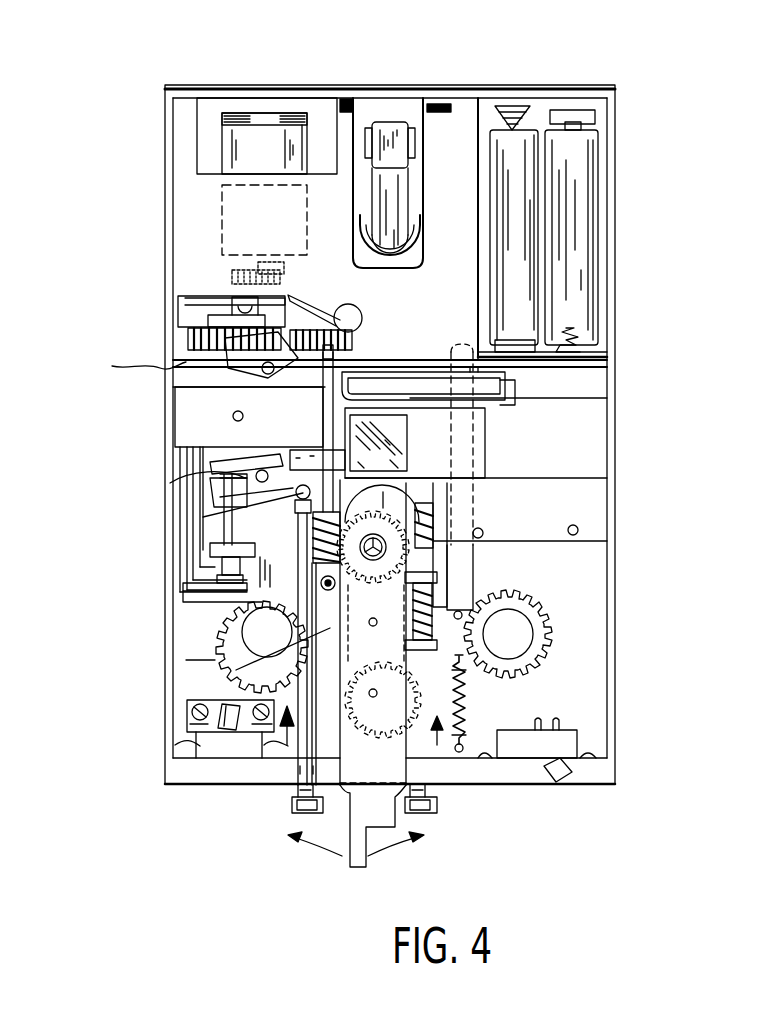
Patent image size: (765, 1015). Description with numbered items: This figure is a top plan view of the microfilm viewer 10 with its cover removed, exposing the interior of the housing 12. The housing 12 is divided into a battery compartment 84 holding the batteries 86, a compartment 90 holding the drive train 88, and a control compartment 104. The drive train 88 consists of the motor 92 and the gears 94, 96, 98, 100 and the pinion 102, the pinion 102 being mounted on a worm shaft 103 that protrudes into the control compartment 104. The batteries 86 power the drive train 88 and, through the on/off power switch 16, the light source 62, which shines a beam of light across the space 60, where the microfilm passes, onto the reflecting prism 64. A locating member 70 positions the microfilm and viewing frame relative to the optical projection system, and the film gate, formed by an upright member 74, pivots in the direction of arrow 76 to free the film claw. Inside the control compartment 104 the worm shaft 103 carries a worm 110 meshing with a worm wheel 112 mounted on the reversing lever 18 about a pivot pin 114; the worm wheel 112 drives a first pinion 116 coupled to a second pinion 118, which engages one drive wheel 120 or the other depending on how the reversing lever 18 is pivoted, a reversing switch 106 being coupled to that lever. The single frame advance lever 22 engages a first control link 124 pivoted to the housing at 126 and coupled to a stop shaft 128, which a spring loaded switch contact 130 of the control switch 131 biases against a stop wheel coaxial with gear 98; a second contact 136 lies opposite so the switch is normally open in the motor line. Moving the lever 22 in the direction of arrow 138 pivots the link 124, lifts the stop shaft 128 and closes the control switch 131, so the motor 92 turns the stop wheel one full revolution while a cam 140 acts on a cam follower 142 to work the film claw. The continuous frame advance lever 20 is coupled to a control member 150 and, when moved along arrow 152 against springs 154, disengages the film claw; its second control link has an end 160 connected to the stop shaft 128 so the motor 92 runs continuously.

The timing device 10 is at (133, 106).
The housing 12 is at (608, 606).
The on/off power switch 16 is at (566, 776).
The reversing lever 18 is at (350, 864).
The continuous frame advance lever 20 is at (437, 806).
The single frame advance lever 22 is at (292, 805).
The space 60 is at (440, 418).
The light source 62 is at (402, 184).
The reflecting prism 64 is at (412, 446).
The pawl 70 is at (243, 372).
The upright member 74 is at (354, 352).
The arrow 76 is at (500, 383).
The battery compartment 84 is at (596, 340).
The batteries 86 is at (518, 155).
The drive train 88 is at (186, 212).
The compartment 90 is at (347, 100).
The motor 92 is at (222, 115).
The gear 94 is at (284, 272).
The gear 96 is at (230, 276).
The gear 98 is at (192, 338).
The gear 100 is at (304, 304).
The pinion 102 is at (356, 332).
The worm shaft 103 is at (328, 434).
The control compartment 104 is at (186, 668).
The reversing switch 106 is at (198, 742).
The worm 110 is at (312, 542).
The worm wheel 112 is at (488, 528).
The pivot pin 114 is at (446, 558).
The first pinion 116 is at (379, 632).
The second pinion 118 is at (373, 812).
The drive wheel 120 is at (240, 664).
The first control link 124 is at (190, 514).
The pivot 126 is at (180, 448).
The stop shaft 128 is at (200, 490).
The spring loaded switch contact 130 is at (200, 572).
The control switch 131 is at (190, 614).
The contact 136 is at (186, 602).
The arrow 138 is at (270, 748).
The cam 140 is at (206, 318).
The cam follower 142 is at (232, 303).
The control member 150 is at (464, 584).
The arrow 152 is at (438, 748).
The spring 154 is at (462, 698).
The end 160 is at (214, 536).